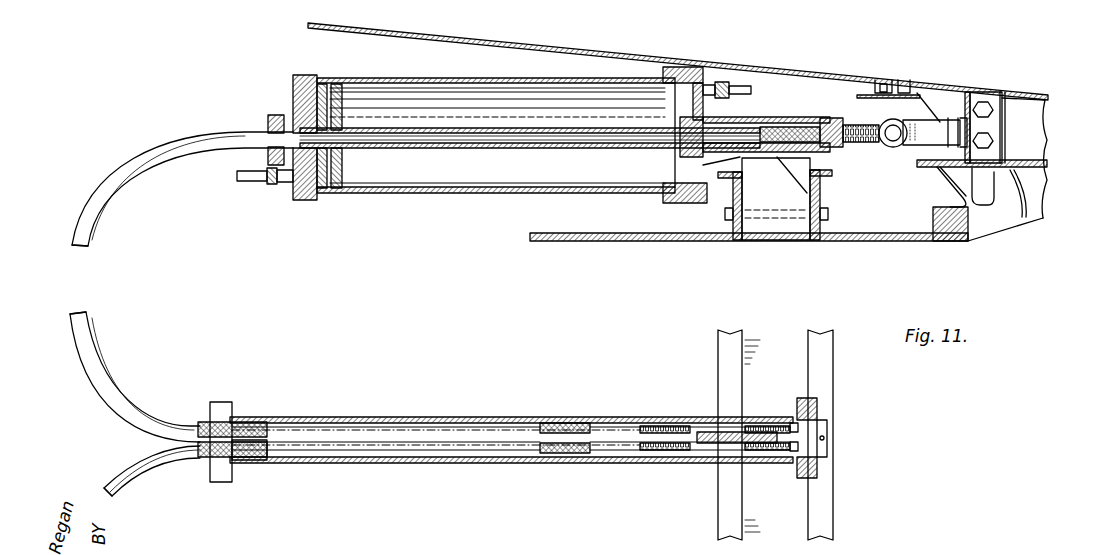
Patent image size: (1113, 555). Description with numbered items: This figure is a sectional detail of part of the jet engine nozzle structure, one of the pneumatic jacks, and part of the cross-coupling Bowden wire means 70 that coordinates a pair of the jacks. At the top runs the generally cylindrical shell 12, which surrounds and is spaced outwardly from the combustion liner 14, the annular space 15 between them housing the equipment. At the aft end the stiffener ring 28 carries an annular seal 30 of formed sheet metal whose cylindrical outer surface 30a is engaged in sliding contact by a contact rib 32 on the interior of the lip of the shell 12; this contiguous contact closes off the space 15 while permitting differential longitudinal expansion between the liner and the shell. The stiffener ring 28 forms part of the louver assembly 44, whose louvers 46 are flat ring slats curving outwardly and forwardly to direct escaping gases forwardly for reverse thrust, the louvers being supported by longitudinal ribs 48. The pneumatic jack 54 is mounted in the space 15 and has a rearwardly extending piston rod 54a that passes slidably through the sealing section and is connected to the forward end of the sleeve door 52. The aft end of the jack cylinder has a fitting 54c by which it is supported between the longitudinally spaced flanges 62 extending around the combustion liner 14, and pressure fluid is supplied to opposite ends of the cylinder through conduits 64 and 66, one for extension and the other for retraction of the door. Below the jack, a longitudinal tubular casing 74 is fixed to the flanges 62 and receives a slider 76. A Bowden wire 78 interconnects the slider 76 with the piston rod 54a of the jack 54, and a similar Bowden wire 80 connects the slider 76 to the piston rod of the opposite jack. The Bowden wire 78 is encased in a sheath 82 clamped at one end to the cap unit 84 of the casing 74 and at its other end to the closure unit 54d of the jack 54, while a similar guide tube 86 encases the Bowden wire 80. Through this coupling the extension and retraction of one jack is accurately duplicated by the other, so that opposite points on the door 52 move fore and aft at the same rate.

The shell 12 is at (596, 46).
The combustion liner 14 is at (613, 242).
The annular space 15 is at (826, 96).
The stiffener ring 28 is at (985, 212).
The annular seal 30 is at (930, 118).
The cylindrical outer surface 30a is at (907, 80).
The contact rib 32 is at (886, 79).
The louver assembly 44 is at (1046, 190).
The louvers 46 is at (1047, 208).
The longitudinal ribs 48 is at (1016, 220).
The door 52 is at (992, 92).
The pneumatic jack 54 is at (420, 192).
The piston rod 54a is at (597, 128).
The fitting 54c is at (781, 200).
The closure unit 54d is at (276, 114).
The flanges 62 is at (733, 192).
The conduit 64 is at (252, 182).
The conduit 66 is at (744, 84).
The Bowden wire means 70 is at (345, 464).
The tubular casing 74 is at (373, 418).
The slider 76 is at (695, 432).
The Bowden wire 78 is at (262, 422).
The Bowden wire 80 is at (255, 458).
The sheath 82 is at (88, 246).
The cap unit 84 is at (228, 412).
The guide tube 86 is at (142, 470).